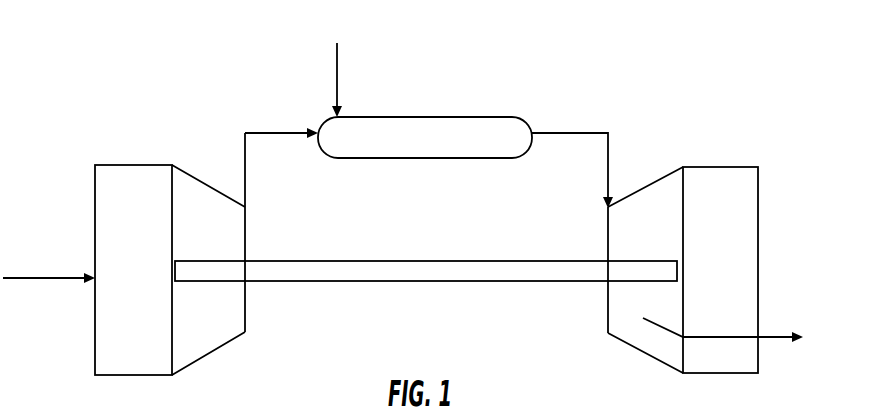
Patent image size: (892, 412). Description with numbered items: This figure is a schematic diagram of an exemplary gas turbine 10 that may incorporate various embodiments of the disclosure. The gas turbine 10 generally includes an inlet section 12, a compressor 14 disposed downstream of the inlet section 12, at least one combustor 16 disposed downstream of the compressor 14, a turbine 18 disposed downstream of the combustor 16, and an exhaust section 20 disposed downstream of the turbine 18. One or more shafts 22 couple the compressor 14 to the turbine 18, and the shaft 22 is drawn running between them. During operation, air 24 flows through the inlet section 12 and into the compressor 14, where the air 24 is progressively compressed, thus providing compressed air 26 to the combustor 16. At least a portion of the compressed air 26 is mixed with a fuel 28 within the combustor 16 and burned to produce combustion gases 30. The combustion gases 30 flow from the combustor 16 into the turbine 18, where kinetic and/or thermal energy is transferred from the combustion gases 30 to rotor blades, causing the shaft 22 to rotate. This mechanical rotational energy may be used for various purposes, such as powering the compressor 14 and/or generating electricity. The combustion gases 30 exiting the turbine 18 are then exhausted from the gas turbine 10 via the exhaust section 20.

The gas turbine 10 is at (283, 58).
The inlet section 12 is at (108, 164).
The compressor 14 is at (191, 176).
The combustor 16 is at (479, 117).
The turbine 18 is at (666, 170).
The exhaust section 20 is at (736, 167).
The shaft 22 is at (390, 284).
The air 24 is at (50, 275).
The compressed air 26 is at (273, 137).
The fuel 28 is at (339, 70).
The combustion gases 30 is at (554, 135).